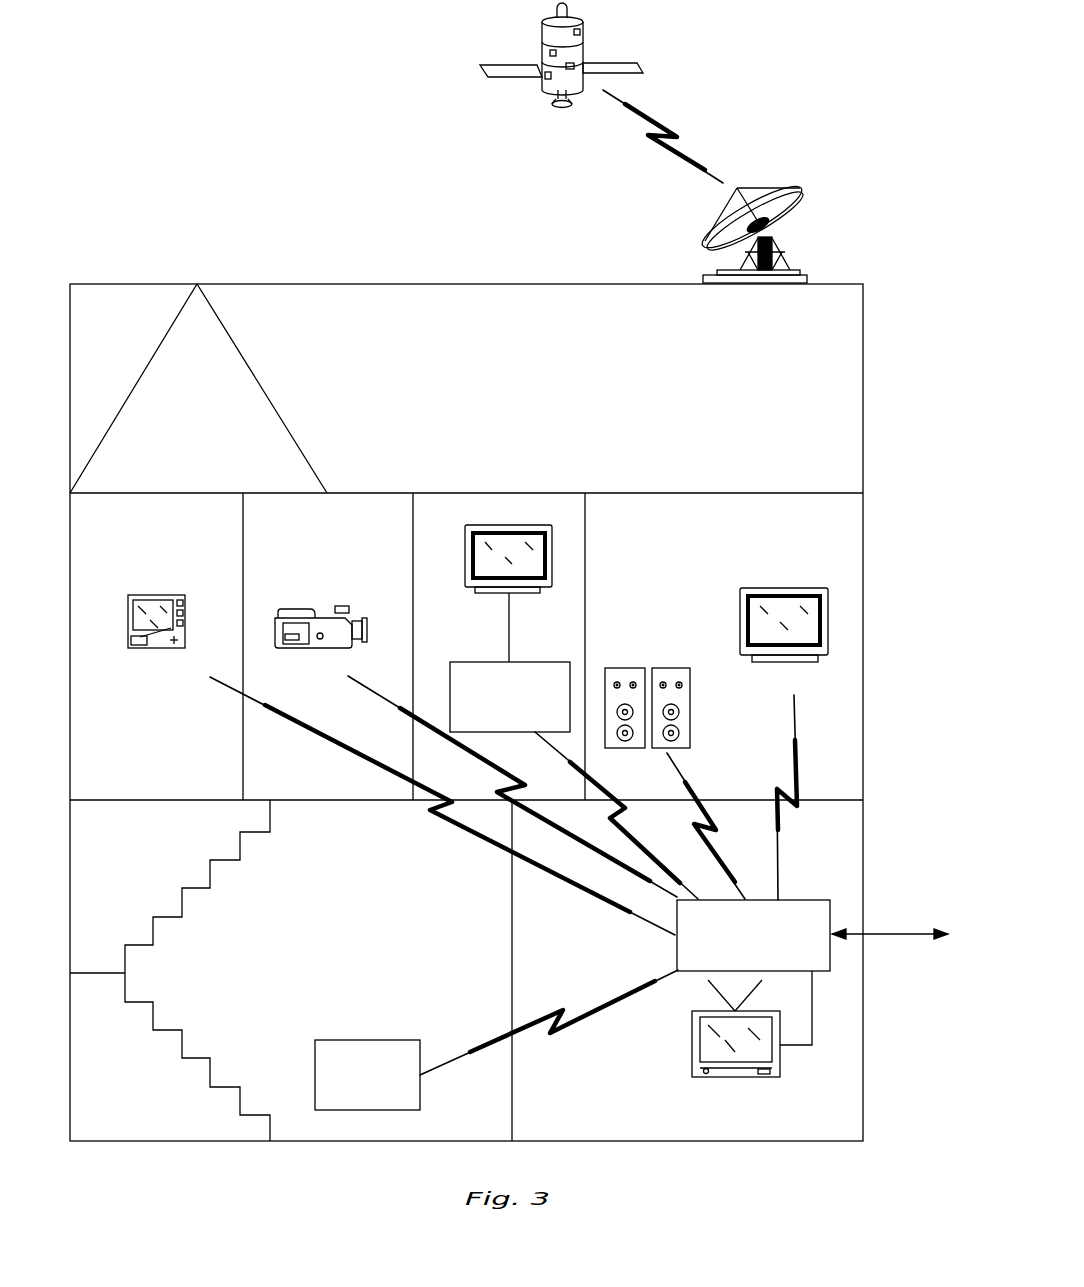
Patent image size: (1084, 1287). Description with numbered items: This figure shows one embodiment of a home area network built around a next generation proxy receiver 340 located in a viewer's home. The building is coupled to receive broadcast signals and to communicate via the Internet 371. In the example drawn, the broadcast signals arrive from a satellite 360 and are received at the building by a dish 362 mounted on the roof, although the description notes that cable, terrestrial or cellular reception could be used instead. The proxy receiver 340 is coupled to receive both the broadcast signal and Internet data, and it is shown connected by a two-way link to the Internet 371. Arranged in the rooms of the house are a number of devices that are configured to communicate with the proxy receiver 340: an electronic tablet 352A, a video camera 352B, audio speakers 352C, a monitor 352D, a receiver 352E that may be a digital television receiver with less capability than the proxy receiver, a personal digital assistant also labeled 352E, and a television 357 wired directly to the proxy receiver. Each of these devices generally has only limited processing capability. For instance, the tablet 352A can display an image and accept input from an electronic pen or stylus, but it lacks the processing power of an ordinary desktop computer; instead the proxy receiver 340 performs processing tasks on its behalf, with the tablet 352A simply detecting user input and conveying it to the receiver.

The satellite 360 is at (540, 35).
The dish 362 is at (800, 188).
The electronic tablet 352A is at (158, 593).
The video camera 352B is at (300, 608).
The audio speakers 352C is at (650, 668).
The monitor 352D is at (775, 586).
The receiver 352E is at (538, 717).
The next generation proxy receiver 340 is at (770, 957).
The television 357 is at (692, 1040).
The Internet 371 is at (890, 911).